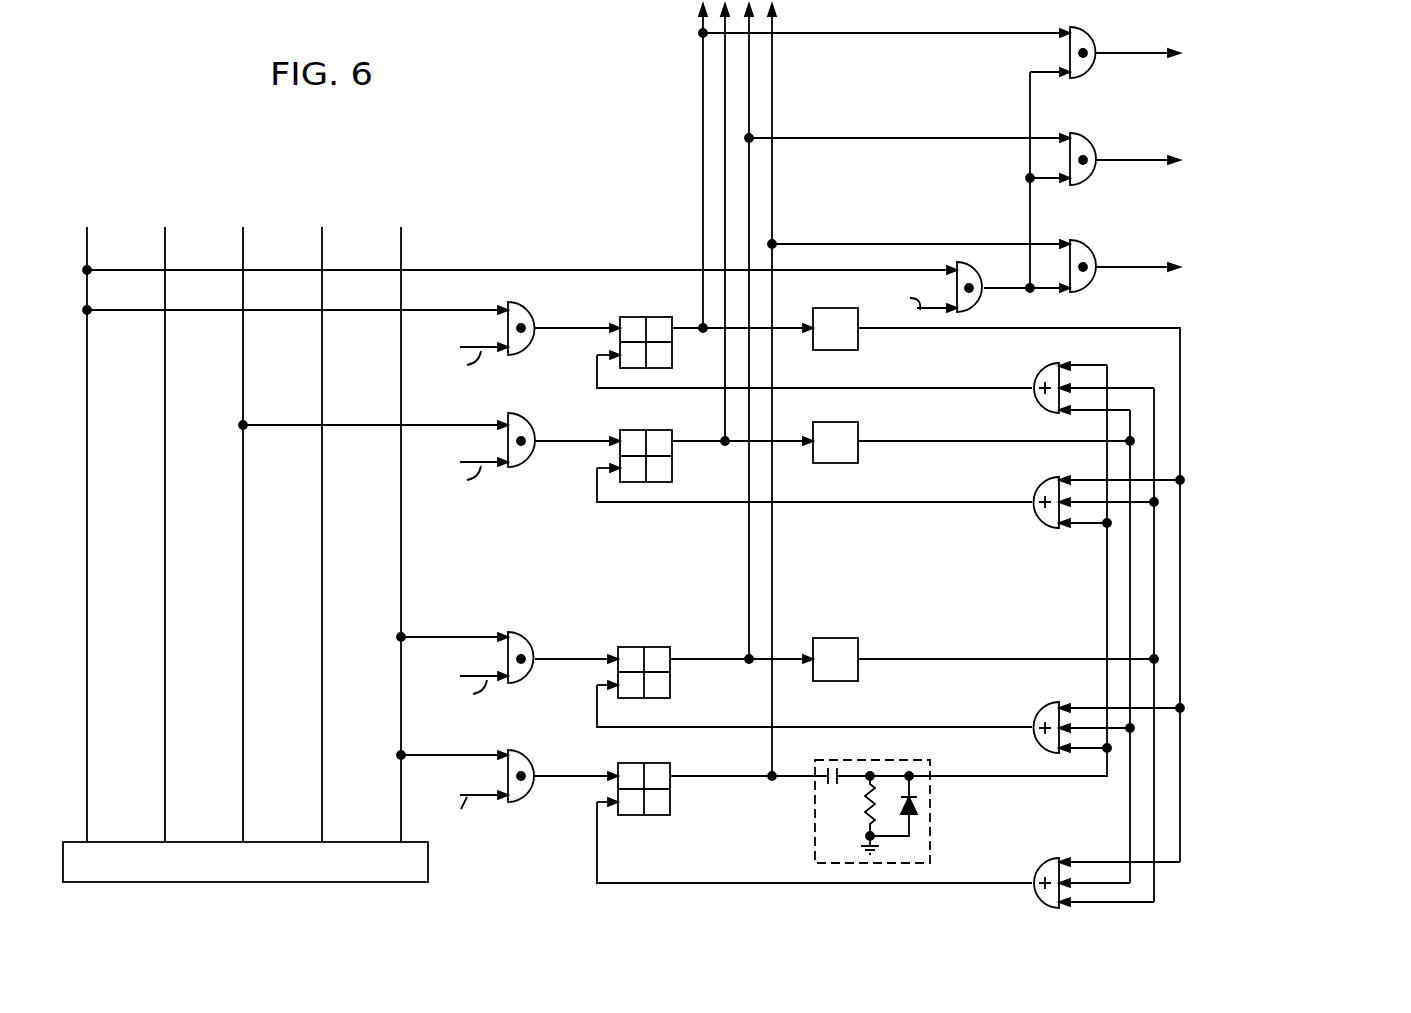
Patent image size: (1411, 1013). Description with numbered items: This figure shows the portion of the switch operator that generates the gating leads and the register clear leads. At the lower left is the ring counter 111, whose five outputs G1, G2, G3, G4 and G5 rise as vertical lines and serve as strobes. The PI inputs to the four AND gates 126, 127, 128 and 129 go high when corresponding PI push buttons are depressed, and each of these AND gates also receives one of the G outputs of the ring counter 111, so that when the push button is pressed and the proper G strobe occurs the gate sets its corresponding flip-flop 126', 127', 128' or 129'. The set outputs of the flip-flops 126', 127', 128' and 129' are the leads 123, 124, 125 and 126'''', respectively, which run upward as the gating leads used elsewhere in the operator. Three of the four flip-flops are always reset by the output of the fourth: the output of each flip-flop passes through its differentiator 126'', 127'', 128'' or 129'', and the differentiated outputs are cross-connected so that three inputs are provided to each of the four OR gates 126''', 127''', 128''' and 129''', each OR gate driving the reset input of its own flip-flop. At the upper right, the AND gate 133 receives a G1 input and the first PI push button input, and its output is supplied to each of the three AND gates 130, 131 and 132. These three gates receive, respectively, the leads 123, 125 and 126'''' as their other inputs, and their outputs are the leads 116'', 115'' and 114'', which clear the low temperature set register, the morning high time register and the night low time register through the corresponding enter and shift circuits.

The ring counter 111 is at (428, 876).
The G1 output of ring counter G1 is at (87, 800).
The G2 output of ring counter G2 is at (165, 815).
The G3 output of ring counter G3 is at (243, 826).
The G4 output of ring counter G4 is at (322, 735).
The G5 output of ring counter G5 is at (401, 793).
The lead 123 is at (703, 55).
The lead 124 is at (725, 76).
The lead 125 is at (749, 103).
The lead 126'''' is at (810, 392).
The AND gate 126 is at (326, 327).
The flip-flop 126' is at (783, 334).
The differentiator 126'' is at (926, 570).
The OR gate 126''' is at (1069, 619).
The AND gate 127 is at (404, 441).
The flip-flop 127' is at (783, 447).
The differentiator 127'' is at (903, 428).
The OR gate 127''' is at (1083, 514).
The AND gate 128 is at (478, 654).
The flip-flop 128' is at (783, 671).
The differentiator 128'' is at (914, 644).
The OR gate 128''' is at (1079, 715).
The AND gate 129 is at (478, 776).
The flip-flop 129' is at (783, 808).
The differentiator 129'' is at (907, 811).
The OR gate 129''' is at (1087, 868).
The AND gate 130 is at (1094, 36).
The AND gate 131 is at (1090, 142).
The AND gate 132 is at (1092, 246).
The AND gate 133 is at (985, 242).
The lead 116'' is at (1246, 62).
The lead 115'' is at (1246, 168).
The lead 114'' is at (1242, 274).